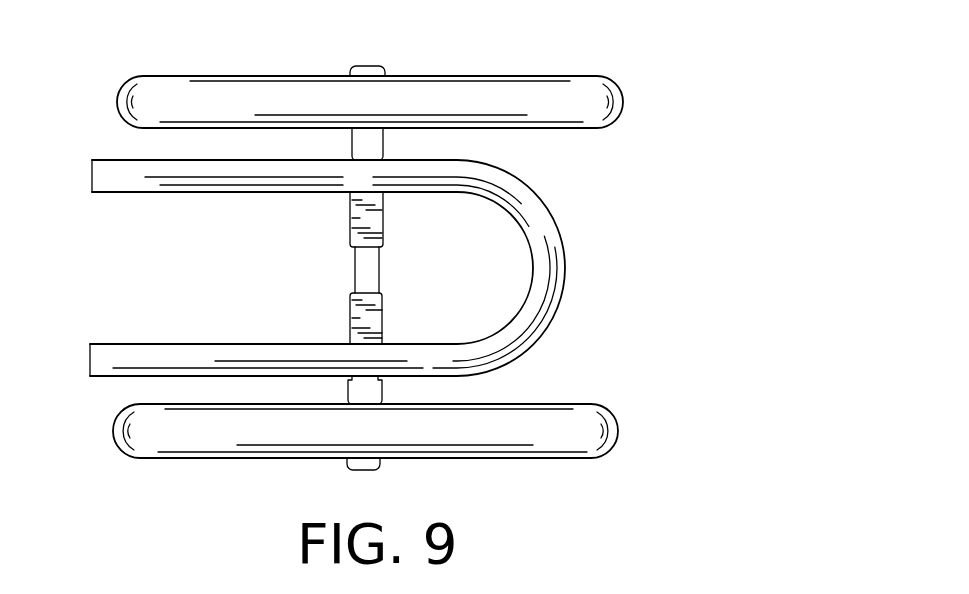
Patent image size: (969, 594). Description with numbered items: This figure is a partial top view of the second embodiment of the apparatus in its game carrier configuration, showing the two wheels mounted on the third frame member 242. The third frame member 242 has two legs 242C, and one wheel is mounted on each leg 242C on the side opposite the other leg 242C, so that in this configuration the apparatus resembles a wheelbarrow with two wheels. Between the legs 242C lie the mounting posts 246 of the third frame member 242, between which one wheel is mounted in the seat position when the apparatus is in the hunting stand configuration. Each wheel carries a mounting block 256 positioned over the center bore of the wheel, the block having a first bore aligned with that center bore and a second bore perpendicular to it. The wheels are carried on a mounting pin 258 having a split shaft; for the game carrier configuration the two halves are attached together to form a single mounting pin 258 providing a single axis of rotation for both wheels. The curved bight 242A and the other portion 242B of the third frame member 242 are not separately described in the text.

The third frame member 242 is at (369, 297).
The curved bight portion of clip 242A is at (553, 273).
The lower leg of clip 242B is at (110, 360).
The leg 242C is at (108, 177).
The mounting post 246 is at (350, 318).
The mounting block 256 is at (358, 397).
The mounting pin 258 is at (368, 272).